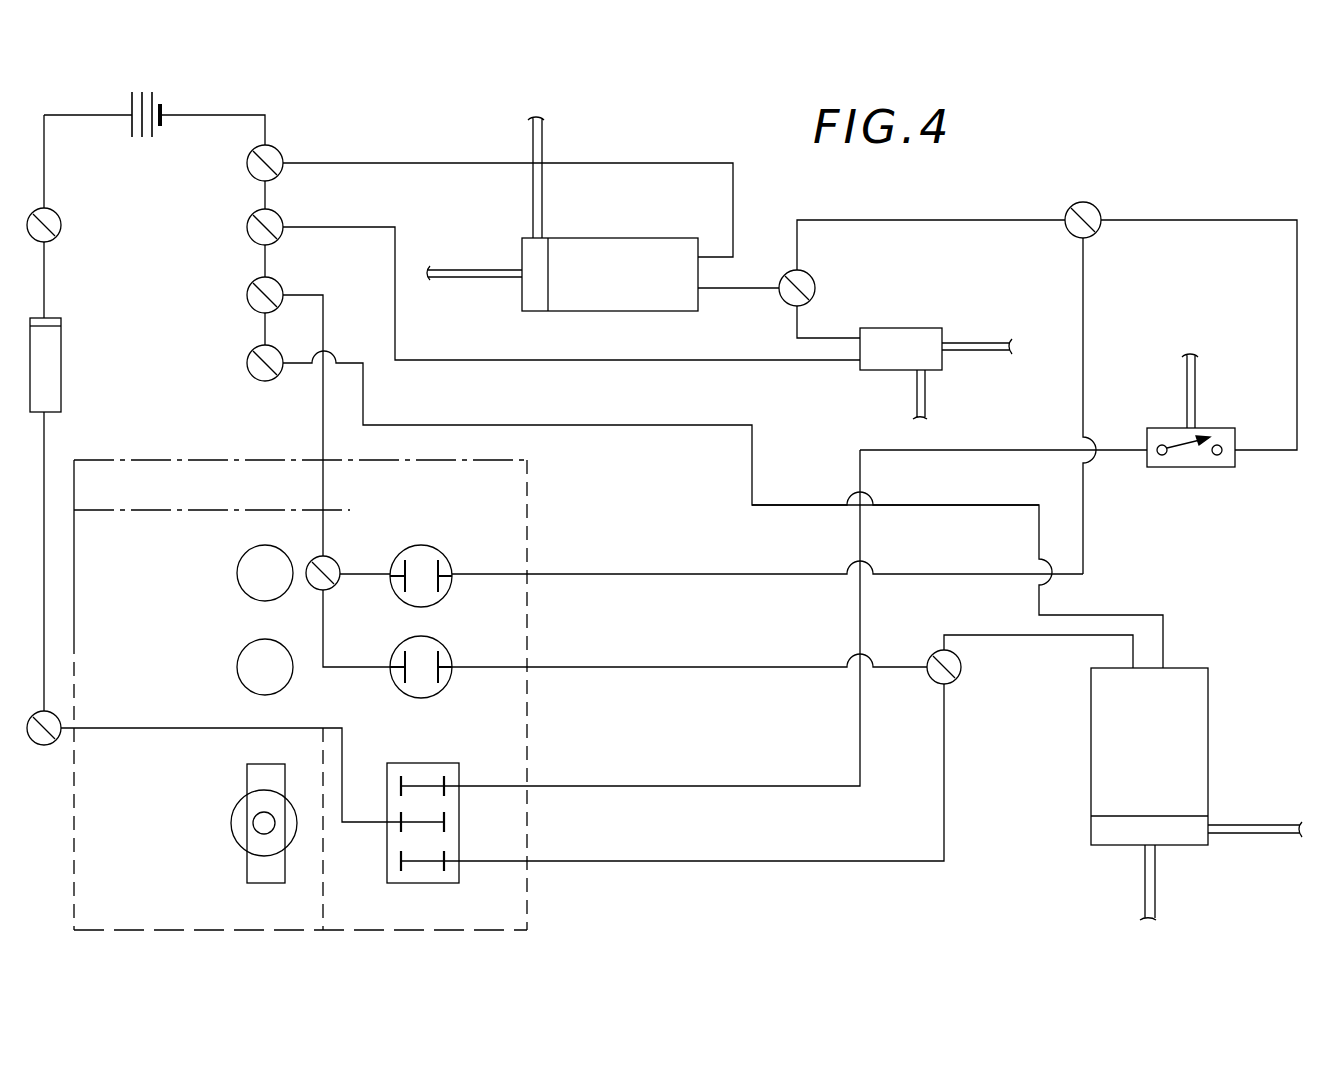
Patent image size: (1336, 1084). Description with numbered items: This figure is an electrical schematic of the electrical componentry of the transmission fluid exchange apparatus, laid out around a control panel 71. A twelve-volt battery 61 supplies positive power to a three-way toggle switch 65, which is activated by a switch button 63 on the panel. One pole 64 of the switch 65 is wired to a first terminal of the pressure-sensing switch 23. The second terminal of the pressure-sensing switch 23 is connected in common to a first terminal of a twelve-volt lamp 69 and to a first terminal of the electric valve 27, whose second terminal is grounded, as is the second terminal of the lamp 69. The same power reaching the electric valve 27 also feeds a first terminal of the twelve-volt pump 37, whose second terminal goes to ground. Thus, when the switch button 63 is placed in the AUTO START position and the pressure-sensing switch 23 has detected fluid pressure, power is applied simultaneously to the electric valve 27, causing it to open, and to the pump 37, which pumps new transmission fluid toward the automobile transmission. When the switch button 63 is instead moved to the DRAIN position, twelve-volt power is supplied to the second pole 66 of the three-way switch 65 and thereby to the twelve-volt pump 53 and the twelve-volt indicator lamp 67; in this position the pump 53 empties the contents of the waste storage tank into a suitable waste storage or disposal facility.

The 12-volt battery 61 is at (148, 139).
The 12-volt pump 37 is at (626, 238).
The electric valve 27 is at (886, 328).
The pressure-sensing switch 23 is at (1212, 428).
The control panel 71 is at (527, 490).
The 12-volt lamp 69 is at (451, 564).
The 12-volt indicator lamp 67 is at (451, 646).
The pole of the switch 64 is at (445, 781).
The three-way toggle switch 65 is at (460, 808).
The second pole of the three-way switch 66 is at (445, 863).
The switch button 63 is at (246, 849).
The 12-volt pump 53 is at (1091, 802).